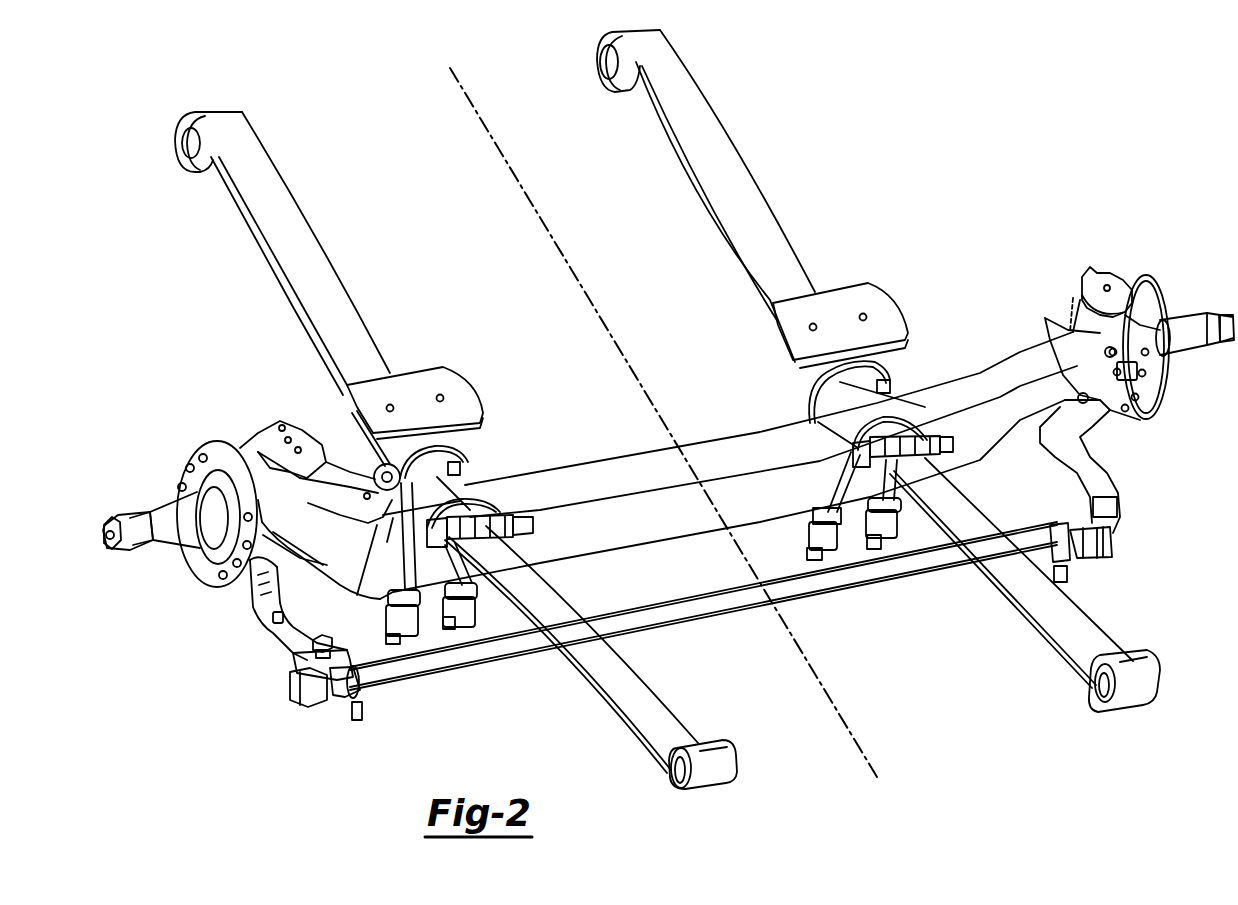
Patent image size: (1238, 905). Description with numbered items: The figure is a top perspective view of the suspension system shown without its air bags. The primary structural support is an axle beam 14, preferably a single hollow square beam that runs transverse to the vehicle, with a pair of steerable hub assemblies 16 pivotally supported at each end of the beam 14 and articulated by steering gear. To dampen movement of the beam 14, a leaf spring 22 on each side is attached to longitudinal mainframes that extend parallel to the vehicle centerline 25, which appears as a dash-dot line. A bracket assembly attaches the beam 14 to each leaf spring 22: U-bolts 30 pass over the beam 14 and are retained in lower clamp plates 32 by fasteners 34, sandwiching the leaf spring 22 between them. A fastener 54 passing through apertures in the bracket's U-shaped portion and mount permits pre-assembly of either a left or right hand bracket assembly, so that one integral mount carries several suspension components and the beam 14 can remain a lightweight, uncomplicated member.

The axle beam 14 is at (650, 531).
The steerable hub assembly 16 is at (218, 553).
The leaf spring 22 is at (263, 170).
The vehicle centerline 25 is at (847, 720).
The U-bolt 30 is at (830, 507).
The lower clamp plate 32 is at (407, 642).
The fastener 34 is at (458, 630).
The fastener 54 is at (470, 462).